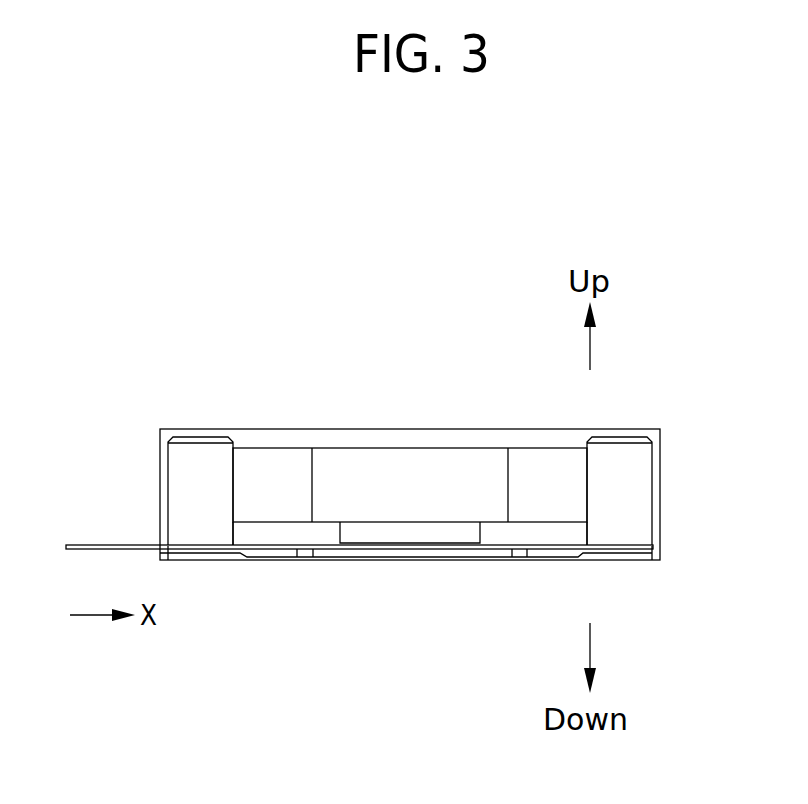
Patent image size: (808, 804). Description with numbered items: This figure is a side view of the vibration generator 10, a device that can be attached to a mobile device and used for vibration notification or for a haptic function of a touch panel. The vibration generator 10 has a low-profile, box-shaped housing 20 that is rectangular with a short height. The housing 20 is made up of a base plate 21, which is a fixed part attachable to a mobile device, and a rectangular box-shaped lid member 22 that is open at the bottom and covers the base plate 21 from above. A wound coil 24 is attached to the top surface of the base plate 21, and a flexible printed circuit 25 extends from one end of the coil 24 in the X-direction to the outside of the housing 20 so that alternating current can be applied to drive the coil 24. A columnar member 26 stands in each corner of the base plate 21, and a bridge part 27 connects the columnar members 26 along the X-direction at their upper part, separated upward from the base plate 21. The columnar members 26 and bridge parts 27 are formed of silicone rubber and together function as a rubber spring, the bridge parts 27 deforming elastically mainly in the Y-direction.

The vibration generator 10 is at (124, 398).
The housing 20 is at (768, 558).
The base plate 21 is at (623, 558).
The lid member 22 is at (680, 492).
The coil 24 is at (532, 533).
The flexible printed circuit 25 is at (93, 545).
The columnar member 26 is at (195, 453).
The bridge part 27 is at (428, 468).